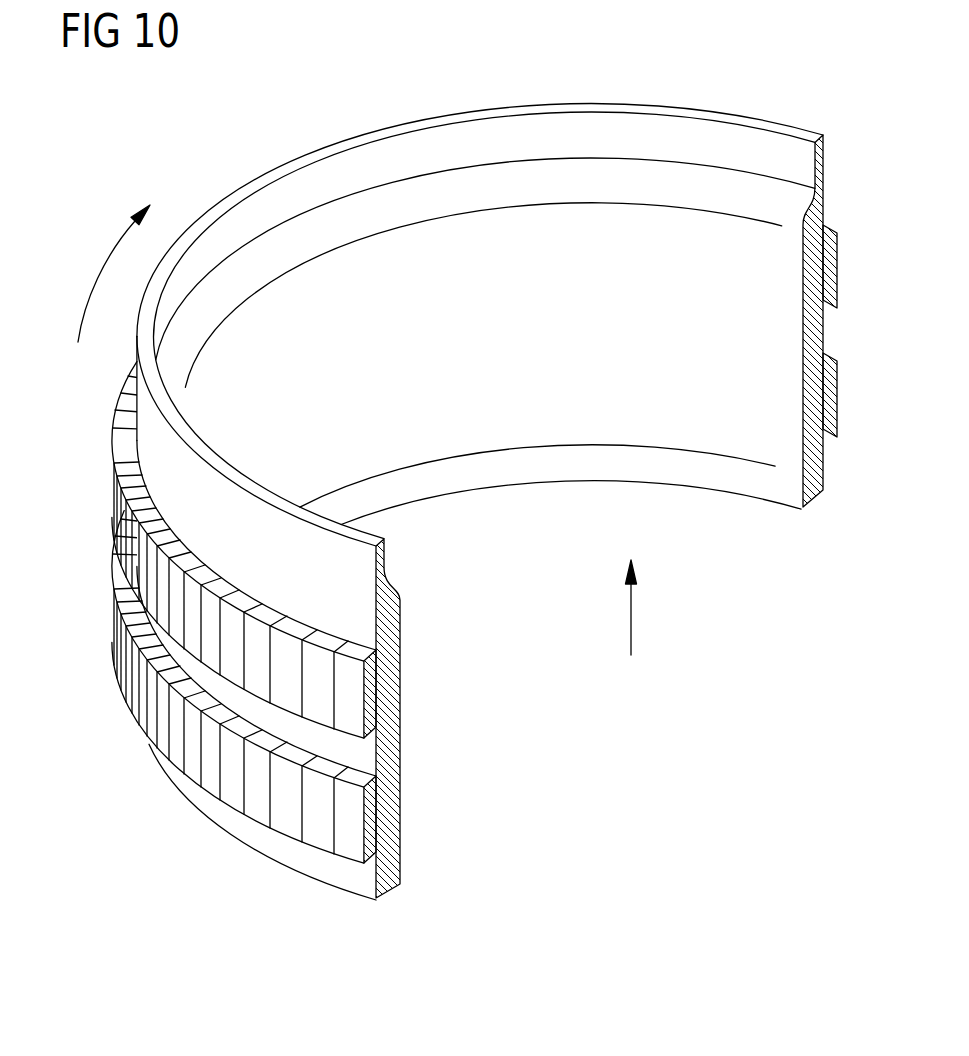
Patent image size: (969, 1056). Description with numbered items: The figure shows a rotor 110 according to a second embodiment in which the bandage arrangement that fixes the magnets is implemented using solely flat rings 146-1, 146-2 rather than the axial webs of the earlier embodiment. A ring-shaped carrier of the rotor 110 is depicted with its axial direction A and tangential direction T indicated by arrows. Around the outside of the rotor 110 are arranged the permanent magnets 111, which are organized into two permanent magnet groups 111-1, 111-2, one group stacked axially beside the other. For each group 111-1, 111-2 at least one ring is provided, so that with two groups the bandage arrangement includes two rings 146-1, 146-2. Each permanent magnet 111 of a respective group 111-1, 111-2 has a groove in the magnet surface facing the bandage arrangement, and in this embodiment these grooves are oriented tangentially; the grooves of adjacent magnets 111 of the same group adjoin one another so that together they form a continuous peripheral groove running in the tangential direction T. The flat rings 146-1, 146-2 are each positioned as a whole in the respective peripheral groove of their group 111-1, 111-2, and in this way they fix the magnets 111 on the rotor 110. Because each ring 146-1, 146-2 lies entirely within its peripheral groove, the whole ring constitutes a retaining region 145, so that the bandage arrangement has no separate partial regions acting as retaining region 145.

The rotor 110 is at (742, 80).
The permanent magnets 111 is at (220, 596).
The permanent magnet group 111-1 is at (272, 840).
The permanent magnet group 111-2 is at (333, 633).
The retaining region 145 is at (469, 544).
The flat ring 146-1 is at (358, 828).
The flat ring 146-2 is at (358, 702).
The tangential direction T is at (97, 268).
The axial direction A is at (632, 617).